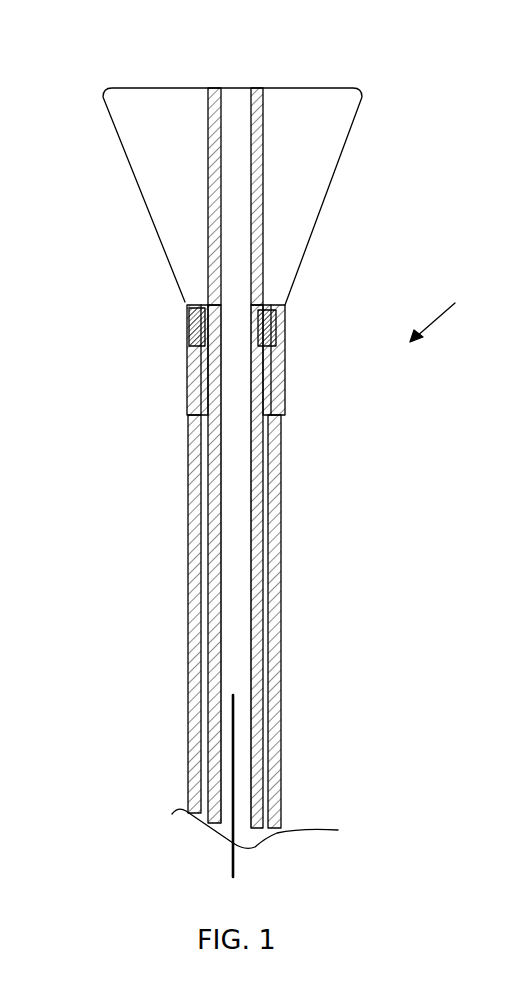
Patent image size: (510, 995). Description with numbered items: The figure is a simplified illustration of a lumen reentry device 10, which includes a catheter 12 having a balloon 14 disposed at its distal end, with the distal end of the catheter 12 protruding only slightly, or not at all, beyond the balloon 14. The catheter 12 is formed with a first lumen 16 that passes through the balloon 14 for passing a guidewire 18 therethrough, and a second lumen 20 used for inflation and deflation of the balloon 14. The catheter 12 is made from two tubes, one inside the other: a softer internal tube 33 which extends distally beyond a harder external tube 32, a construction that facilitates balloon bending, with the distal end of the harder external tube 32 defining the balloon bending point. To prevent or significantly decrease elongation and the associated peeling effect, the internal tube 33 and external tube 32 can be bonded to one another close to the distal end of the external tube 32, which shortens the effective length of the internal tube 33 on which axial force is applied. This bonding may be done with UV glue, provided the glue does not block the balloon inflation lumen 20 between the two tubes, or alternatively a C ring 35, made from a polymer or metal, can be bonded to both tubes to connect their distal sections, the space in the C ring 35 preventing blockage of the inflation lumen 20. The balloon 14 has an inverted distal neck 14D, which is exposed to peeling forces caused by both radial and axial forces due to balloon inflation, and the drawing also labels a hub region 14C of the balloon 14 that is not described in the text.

The lumen reentry device 10 is at (446, 310).
The catheter 12 is at (252, 621).
The balloon 14 is at (145, 108).
The hub collar 14C is at (178, 345).
The inverted distal neck 14D is at (207, 147).
The first lumen 16 is at (233, 636).
The guidewire 18 is at (232, 758).
The second lumen 20 is at (205, 545).
The external tube 32 is at (282, 437).
The internal tube 33 is at (213, 263).
The C ring 35 is at (187, 327).